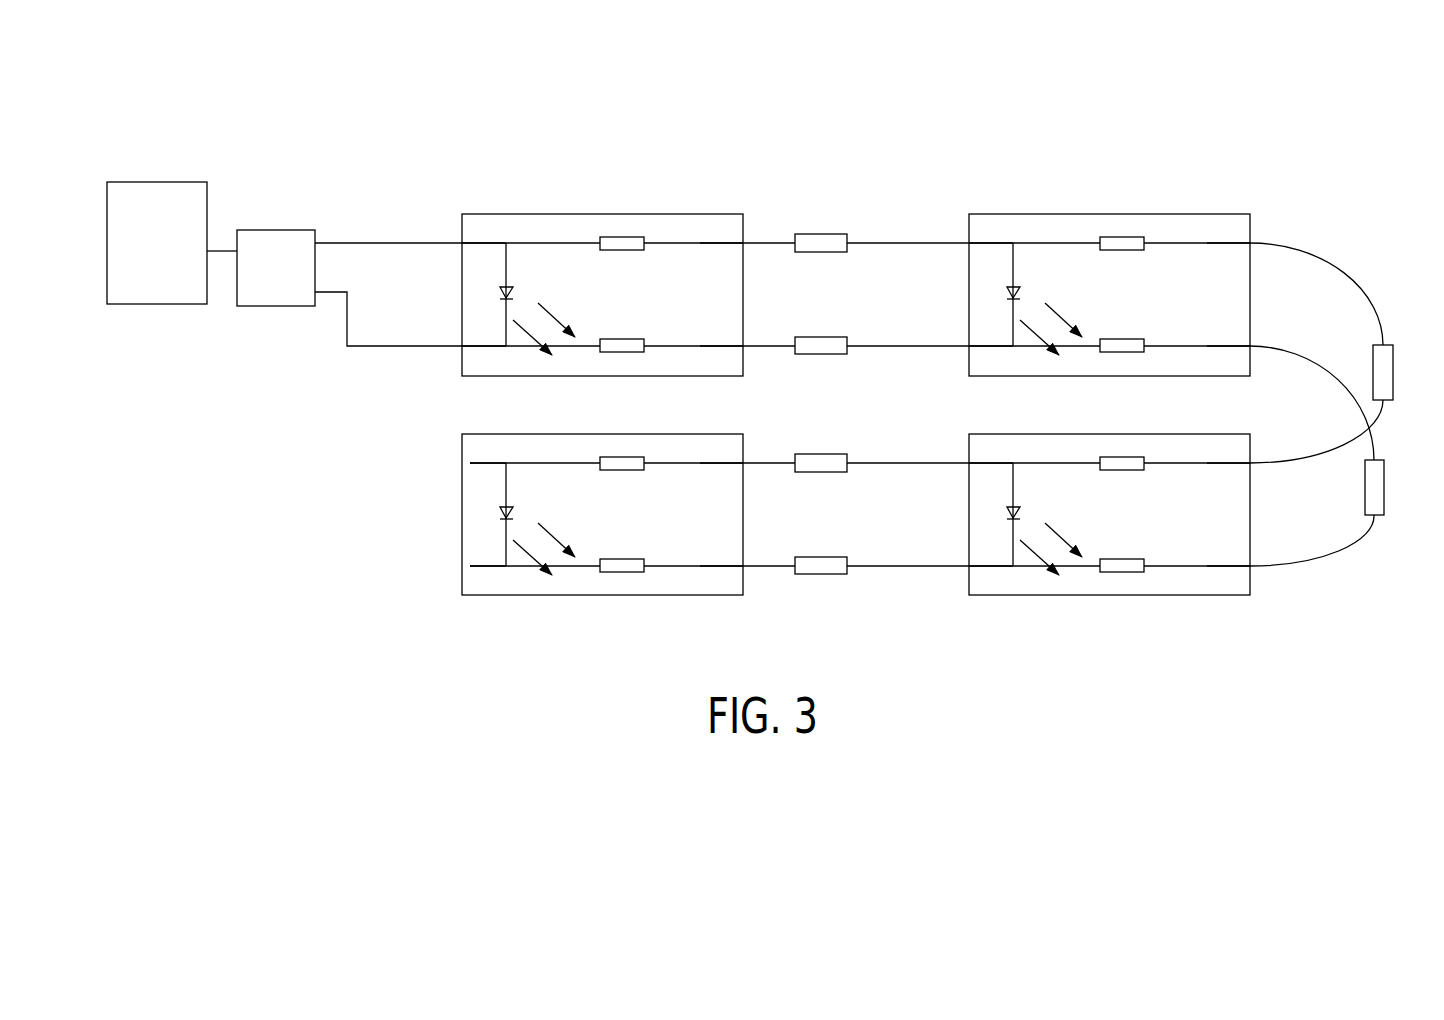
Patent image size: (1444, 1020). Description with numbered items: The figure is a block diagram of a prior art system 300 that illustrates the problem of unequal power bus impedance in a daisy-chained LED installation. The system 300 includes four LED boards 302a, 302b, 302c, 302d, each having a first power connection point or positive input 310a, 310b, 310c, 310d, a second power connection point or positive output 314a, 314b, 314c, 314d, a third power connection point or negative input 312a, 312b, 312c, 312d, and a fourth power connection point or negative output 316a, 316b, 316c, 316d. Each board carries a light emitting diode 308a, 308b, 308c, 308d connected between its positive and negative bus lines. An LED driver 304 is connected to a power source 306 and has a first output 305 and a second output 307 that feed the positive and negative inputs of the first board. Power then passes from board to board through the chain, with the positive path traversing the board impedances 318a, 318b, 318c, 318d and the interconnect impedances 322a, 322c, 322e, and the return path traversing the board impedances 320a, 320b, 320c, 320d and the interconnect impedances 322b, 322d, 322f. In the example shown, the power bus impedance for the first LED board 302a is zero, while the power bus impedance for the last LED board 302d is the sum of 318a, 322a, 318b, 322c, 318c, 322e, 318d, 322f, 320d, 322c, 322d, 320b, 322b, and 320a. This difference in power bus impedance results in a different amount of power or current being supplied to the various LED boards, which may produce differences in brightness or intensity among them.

The prior art system 300 is at (1200, 95).
The LED board 302a is at (693, 260).
The LED board 302b is at (1207, 260).
The LED board 302c is at (1207, 547).
The LED board 302d is at (693, 547).
The LED driver 304 is at (279, 230).
The first output 305 is at (317, 248).
The power source 306 is at (158, 181).
The second output 307 is at (319, 301).
The light emitting diode 308a is at (521, 290).
The light emitting diode 308b is at (1028, 290).
The light emitting diode 308c is at (1028, 508).
The light emitting diode 308d is at (521, 508).
The first power connection point 310a is at (461, 259).
The first power connection point 310b is at (968, 256).
The first power connection point 310c is at (1255, 475).
The first power connection point 310d is at (748, 475).
The third power connection point 312a is at (461, 354).
The third power connection point 312b is at (968, 359).
The third power connection point 312c is at (1255, 575).
The third power connection point 312d is at (748, 578).
The second power connection point 314a is at (748, 255).
The second power connection point 314b is at (1255, 255).
The second power connection point 314c is at (968, 476).
The second power connection point 314d is at (461, 470).
The fourth power connection point 316a is at (748, 358).
The fourth power connection point 316b is at (1255, 355).
The fourth power connection point 316c is at (968, 579).
The fourth power connection point 316d is at (461, 575).
The power bus impedance 318a is at (622, 237).
The power bus impedance 318b is at (1122, 237).
The power bus impedance 318c is at (1122, 457).
The power bus impedance 318d is at (622, 457).
The power bus impedance 320a is at (623, 339).
The power bus impedance 320b is at (1123, 339).
The second resistor 320c is at (1123, 559).
The power bus impedance 320d is at (623, 559).
The power bus impedance 322a is at (840, 234).
The power bus impedance 322b is at (840, 337).
The power bus impedance 322c is at (1383, 345).
The power bus impedance 322d is at (1375, 460).
The power bus impedance 322e is at (840, 454).
The power bus impedance 322f is at (840, 557).